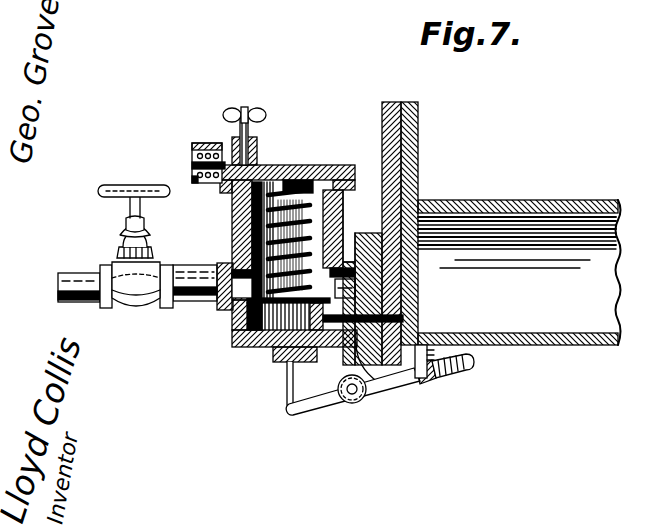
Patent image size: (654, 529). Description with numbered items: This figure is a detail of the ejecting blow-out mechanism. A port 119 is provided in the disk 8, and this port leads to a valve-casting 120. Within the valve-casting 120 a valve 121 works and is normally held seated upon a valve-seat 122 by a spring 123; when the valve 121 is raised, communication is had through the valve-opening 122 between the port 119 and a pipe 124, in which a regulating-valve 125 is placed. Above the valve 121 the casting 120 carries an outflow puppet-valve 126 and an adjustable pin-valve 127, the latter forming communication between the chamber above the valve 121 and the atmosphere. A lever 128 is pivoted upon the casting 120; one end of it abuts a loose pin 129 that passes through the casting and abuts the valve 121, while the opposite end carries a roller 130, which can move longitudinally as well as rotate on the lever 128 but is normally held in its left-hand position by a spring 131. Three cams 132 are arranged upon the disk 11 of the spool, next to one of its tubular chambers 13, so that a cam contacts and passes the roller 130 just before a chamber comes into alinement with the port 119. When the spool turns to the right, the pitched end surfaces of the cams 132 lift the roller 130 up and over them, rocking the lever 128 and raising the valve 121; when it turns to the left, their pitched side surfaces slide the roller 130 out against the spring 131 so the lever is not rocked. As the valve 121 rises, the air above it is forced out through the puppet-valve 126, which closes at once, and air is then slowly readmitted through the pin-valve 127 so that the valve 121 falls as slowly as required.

The disk 8 is at (382, 105).
The disk 11 is at (418, 124).
The tubular chamber 13 is at (519, 272).
The port 119 is at (398, 319).
The valve-casting 120 is at (243, 333).
The valve 121 is at (347, 240).
The valve-seat 122 is at (242, 313).
The spring 123 is at (333, 165).
The pipe 124 is at (198, 278).
The regulating-valve 125 is at (129, 302).
The outflow puppet-valve 126 is at (213, 150).
The adjustable pin-valve 127 is at (262, 105).
The lever 128 is at (328, 410).
The loose pin 129 is at (284, 389).
The roller 130 is at (426, 386).
The spring 131 is at (463, 368).
The cams 132 is at (437, 352).